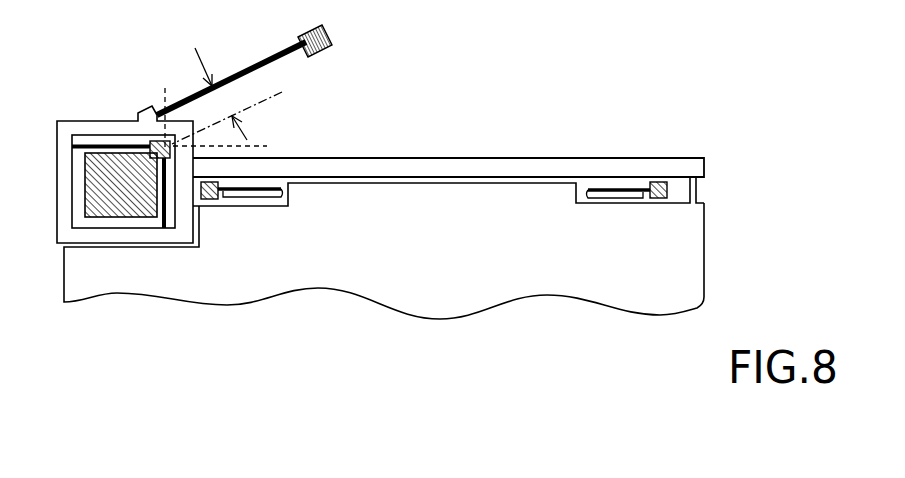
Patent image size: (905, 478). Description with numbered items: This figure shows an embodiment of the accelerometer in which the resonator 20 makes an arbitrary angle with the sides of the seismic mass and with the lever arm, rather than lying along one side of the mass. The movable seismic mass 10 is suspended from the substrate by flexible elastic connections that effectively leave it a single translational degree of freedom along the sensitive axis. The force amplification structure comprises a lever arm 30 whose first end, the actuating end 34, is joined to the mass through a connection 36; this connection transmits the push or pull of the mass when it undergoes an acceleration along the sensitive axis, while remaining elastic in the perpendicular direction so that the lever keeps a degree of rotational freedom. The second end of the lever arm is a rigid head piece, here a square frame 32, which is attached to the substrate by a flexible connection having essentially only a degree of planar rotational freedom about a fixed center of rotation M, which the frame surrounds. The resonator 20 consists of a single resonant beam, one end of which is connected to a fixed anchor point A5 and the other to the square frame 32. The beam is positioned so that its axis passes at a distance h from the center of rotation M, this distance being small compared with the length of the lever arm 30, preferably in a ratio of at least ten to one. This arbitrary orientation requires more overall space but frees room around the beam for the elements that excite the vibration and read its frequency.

The movable seismic mass 10 is at (677, 275).
The resonator 20 is at (235, 75).
The lever arm 30 is at (386, 150).
The square frame 32 is at (107, 128).
The actuating end 34 is at (615, 167).
The connection 36 is at (696, 193).
The center of rotation M is at (100, 196).
The fixed anchor point A5 is at (330, 38).
The distance h is at (223, 115).